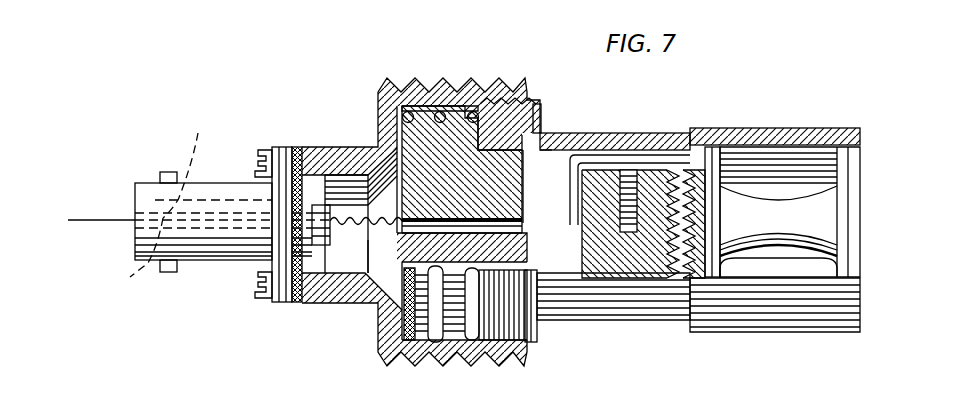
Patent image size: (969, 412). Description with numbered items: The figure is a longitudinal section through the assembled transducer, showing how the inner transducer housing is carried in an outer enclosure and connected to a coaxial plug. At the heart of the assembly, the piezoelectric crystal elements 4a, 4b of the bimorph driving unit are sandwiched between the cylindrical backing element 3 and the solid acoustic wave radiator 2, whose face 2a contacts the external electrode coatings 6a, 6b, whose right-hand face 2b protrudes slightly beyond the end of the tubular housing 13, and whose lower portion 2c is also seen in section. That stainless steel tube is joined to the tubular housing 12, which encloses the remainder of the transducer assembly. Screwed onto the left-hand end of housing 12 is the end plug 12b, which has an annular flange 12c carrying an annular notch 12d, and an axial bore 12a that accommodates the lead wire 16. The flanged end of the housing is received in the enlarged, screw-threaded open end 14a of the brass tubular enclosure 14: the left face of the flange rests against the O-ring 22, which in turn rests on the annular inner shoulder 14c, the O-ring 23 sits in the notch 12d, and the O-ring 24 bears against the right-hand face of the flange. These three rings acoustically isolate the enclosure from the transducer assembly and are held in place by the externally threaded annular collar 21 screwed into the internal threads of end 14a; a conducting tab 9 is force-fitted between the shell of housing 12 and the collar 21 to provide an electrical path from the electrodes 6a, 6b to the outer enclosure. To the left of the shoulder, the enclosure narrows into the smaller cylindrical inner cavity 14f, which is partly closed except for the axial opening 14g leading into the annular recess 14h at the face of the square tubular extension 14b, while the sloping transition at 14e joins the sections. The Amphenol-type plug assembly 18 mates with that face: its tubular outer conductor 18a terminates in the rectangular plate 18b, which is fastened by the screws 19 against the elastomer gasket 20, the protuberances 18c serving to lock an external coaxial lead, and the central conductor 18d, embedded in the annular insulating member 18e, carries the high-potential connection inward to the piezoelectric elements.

The acoustic wave radiator 2 is at (768, 206).
The transformer face 2a is at (712, 160).
The right-hand face of transformer element 2b is at (856, 160).
The housing bottom portion 2c is at (762, 236).
The backing element 3 is at (620, 275).
The crystal element 4a is at (634, 226).
The crystal element 4b is at (719, 232).
The external electrode 6a is at (667, 174).
The external electrode 6b is at (702, 182).
The conducting tab 9 is at (545, 134).
The tubular housing 12 is at (632, 138).
The axial bore 12a is at (520, 221).
The end plug 12b is at (513, 172).
The annular flange 12c is at (455, 118).
The annular notch 12d is at (438, 112).
The tubular housing 13 is at (778, 132).
The tubular enclosure 14 is at (399, 77).
The enlarged open right-hand end 14a is at (496, 98).
The square tubular extension 14b is at (318, 147).
The annular inner shoulder 14c is at (392, 136).
The bottom flange slope 14e is at (382, 288).
The smaller cylindrical inner cavity 14f is at (346, 176).
The axial opening 14g is at (320, 303).
The annular recess 14h is at (300, 181).
The lead wire 16 is at (548, 224).
The plug assembly 18 is at (228, 166).
The tubular outer conductor 18a is at (194, 262).
The rectangular plate 18b is at (278, 216).
The protuberances 18c is at (168, 172).
The central conductor 18d is at (137, 262).
The annular insulating member 18e is at (191, 169).
The screws 19 is at (263, 150).
The gasket 20 is at (284, 302).
The annular collar 21 is at (541, 128).
The O-ring 22 is at (402, 262).
The O-ring 23 is at (434, 311).
The O-ring 24 is at (508, 350).